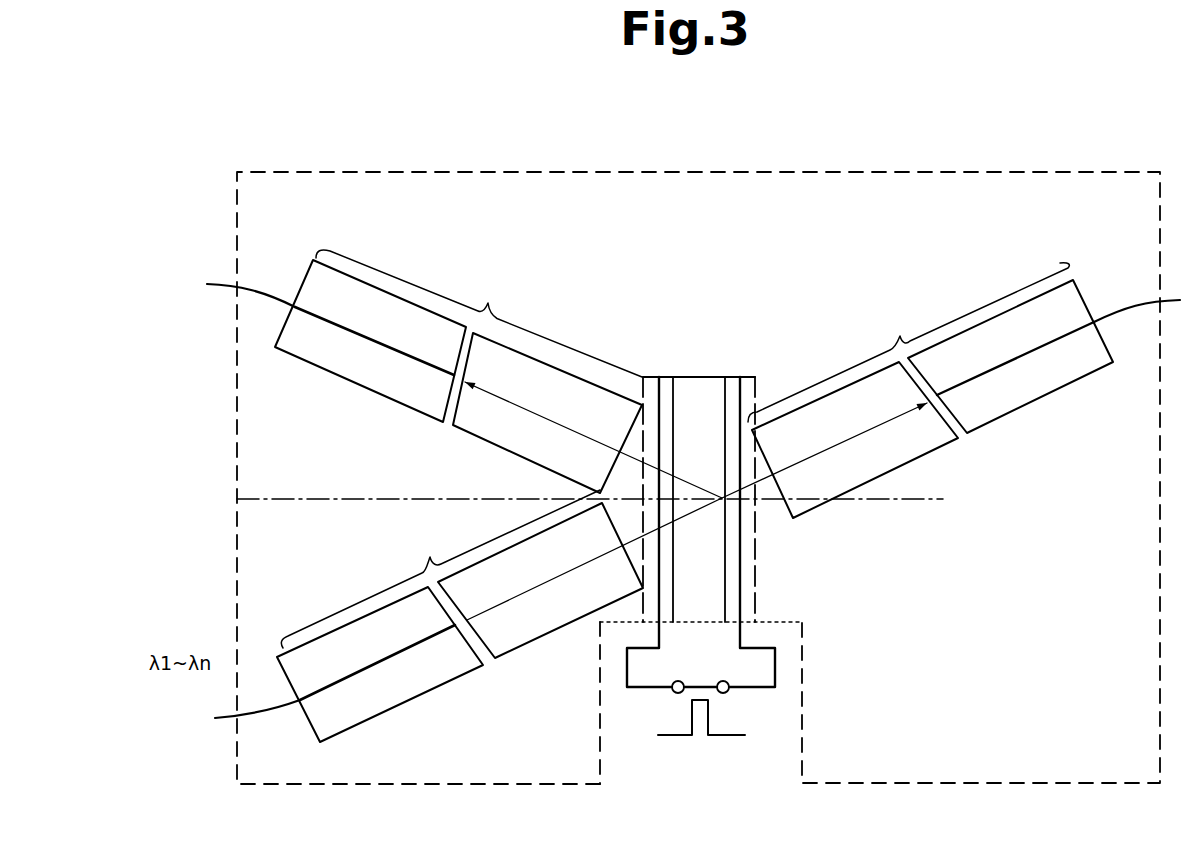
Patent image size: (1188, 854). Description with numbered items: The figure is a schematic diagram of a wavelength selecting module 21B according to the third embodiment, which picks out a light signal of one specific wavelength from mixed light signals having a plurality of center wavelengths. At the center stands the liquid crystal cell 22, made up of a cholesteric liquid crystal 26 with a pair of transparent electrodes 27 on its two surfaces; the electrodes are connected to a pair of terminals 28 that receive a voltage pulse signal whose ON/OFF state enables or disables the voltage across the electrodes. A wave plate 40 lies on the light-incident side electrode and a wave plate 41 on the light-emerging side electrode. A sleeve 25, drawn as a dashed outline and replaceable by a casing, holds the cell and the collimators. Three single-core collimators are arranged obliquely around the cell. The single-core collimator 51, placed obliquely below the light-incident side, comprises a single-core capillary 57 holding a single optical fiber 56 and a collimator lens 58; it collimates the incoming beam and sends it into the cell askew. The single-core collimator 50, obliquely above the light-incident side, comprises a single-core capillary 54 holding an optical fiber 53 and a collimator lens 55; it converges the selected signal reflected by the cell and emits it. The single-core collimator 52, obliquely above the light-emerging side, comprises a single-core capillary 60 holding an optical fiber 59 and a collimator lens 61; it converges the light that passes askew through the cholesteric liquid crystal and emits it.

The wavelength selecting module 21B is at (698, 419).
The liquid crystal cell 22 is at (708, 362).
The sleeve 25 is at (550, 167).
The cholesteric liquid crystal 26 is at (687, 377).
The transparent electrodes 27 is at (654, 603).
The terminals 28 is at (675, 694).
The wave plate 40 is at (648, 377).
The wave plate 41 is at (745, 377).
The single-core collimator 50 is at (479, 313).
The single-core collimator 51 is at (430, 557).
The single-core collimator 52 is at (900, 336).
The optical fiber 53 is at (393, 352).
The single-core capillary 54 is at (317, 362).
The collimator lens 55 is at (477, 430).
The optical fiber 56 is at (343, 683).
The single-core capillary 57 is at (425, 685).
The collimator lens 58 is at (517, 647).
The optical fiber 59 is at (998, 368).
The single-core capillary 60 is at (1077, 377).
The collimator lens 61 is at (927, 447).